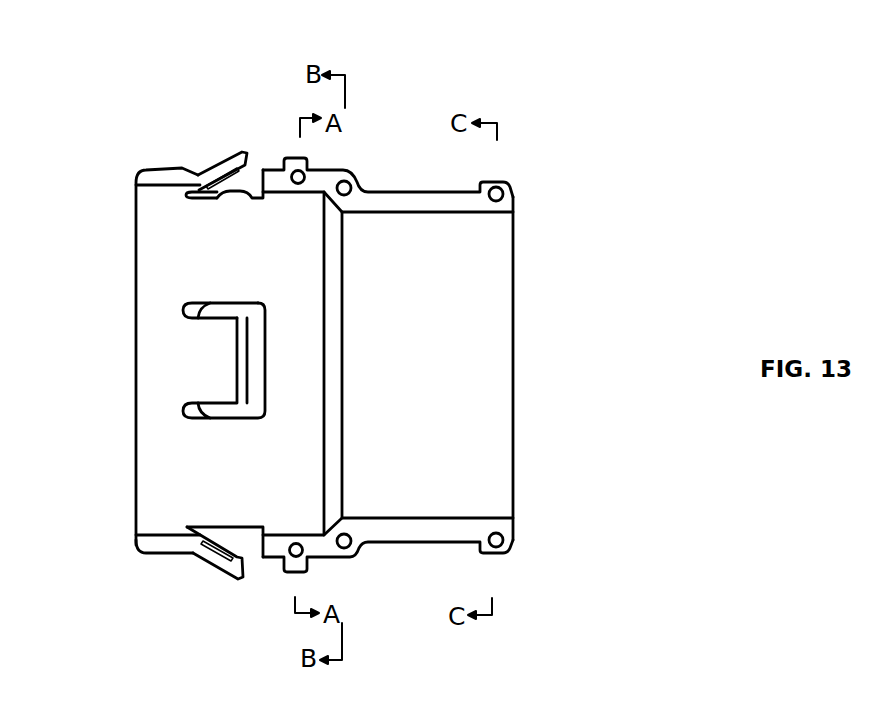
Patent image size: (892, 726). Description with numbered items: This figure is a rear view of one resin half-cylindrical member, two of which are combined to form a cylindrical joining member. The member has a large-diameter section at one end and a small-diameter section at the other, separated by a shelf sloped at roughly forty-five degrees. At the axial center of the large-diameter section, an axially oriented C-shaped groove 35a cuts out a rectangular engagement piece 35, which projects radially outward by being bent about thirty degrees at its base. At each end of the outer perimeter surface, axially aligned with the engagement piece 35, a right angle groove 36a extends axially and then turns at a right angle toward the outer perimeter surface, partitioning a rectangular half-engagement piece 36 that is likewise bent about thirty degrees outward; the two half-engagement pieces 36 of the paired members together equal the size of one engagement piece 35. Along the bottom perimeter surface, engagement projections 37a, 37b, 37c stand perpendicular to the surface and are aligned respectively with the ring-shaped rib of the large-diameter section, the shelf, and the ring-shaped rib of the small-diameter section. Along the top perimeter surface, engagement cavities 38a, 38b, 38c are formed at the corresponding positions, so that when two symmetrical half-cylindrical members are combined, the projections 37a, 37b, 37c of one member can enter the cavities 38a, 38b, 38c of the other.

The engagement piece 35 is at (151, 380).
The C-shaped groove 35a is at (183, 312).
The half-engagement piece 36 is at (217, 160).
The right angle groove 36a is at (212, 200).
The engagement projection 37a is at (277, 559).
The engagement projection 37b is at (351, 546).
The engagement projection 37c is at (511, 543).
The engagement cavity 38a is at (295, 171).
The engagement cavity 38b is at (352, 182).
The engagement cavity 38c is at (508, 188).